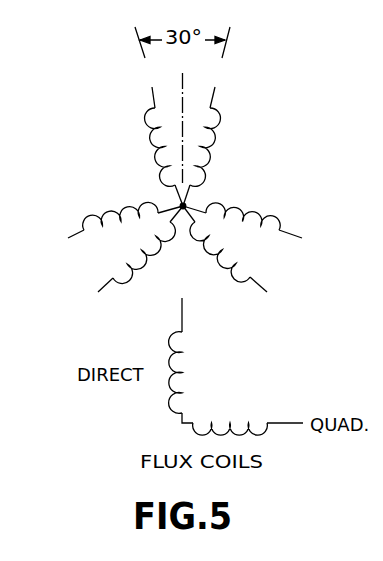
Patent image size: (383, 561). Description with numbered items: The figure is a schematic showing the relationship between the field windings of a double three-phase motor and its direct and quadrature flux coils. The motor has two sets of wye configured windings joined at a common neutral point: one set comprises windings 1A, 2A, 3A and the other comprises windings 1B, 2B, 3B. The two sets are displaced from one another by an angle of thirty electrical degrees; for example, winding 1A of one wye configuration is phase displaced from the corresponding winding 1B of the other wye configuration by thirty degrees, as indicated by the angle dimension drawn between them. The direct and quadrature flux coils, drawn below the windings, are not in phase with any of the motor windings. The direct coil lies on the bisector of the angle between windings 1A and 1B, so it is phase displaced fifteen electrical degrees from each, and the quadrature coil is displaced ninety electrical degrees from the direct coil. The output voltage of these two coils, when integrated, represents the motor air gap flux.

The winding 1A is at (210, 136).
The winding 1B is at (154, 136).
The winding 2A is at (241, 261).
The winding 2B is at (258, 229).
The winding 3A is at (106, 228).
The winding 3B is at (124, 261).